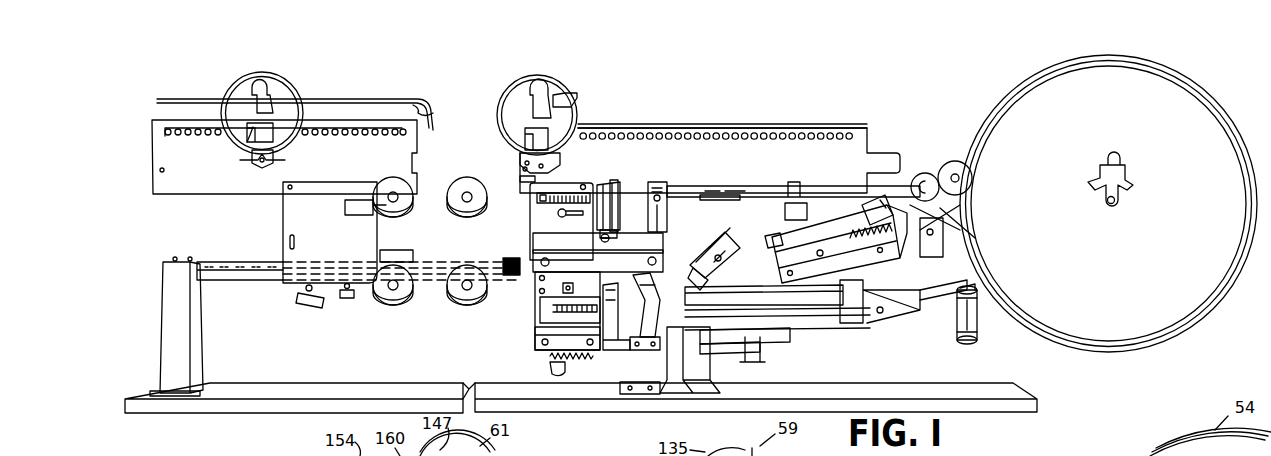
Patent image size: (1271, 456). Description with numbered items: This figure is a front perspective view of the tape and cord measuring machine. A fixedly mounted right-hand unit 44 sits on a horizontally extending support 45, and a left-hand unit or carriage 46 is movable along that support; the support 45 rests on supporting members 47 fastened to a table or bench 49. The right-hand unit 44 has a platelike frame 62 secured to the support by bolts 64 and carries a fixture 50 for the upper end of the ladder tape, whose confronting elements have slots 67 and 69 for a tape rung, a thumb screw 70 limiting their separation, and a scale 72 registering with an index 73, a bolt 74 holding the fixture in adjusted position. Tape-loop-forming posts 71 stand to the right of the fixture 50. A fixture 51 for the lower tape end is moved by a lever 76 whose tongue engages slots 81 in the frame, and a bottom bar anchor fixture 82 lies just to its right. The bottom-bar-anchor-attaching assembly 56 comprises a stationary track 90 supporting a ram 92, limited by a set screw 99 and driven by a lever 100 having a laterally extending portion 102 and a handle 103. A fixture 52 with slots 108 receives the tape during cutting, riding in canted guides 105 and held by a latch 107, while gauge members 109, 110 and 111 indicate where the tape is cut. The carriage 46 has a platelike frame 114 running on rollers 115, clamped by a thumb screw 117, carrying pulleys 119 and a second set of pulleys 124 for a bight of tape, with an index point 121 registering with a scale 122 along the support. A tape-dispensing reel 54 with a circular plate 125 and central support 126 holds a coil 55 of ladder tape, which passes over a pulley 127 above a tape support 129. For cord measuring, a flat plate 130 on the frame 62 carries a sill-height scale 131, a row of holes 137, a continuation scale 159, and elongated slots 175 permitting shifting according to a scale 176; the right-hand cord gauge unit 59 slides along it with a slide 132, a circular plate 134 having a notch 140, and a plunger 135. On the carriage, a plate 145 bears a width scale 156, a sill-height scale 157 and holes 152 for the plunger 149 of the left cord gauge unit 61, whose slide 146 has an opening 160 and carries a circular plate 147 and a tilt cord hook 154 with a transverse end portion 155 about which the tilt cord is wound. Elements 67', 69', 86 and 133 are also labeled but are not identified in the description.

The right-hand unit 44 is at (717, 128).
The horizontally extending support 45 is at (510, 275).
The left-hand unit or carriage 46 is at (260, 147).
The supporting members 47 is at (175, 325).
The table or bench 49 is at (232, 392).
The ladder-tape fixture 50 is at (622, 205).
The ladder-tape fixture 51 is at (598, 372).
The tape-cutting fixture 52 is at (873, 213).
The tape-dispensing reel 54 is at (1108, 202).
The coil of ladder tape 55 is at (1165, 455).
The bottom-bar-anchor-attaching assembly 56 is at (752, 348).
The right-hand cord gauge unit 59 is at (544, 107).
The left-hand cord gauge unit 61 is at (244, 107).
The platelike frame 62 is at (581, 292).
The bolts 64 is at (535, 258).
The slot 67 is at (648, 161).
The lever 67' is at (634, 293).
The slot 69 is at (623, 223).
The pin 69' is at (626, 360).
The thumb screw 70 is at (595, 250).
The tape-loop-forming posts 71 is at (667, 212).
The scale 72 is at (539, 214).
The index 73 is at (530, 183).
The bolt 74 is at (558, 213).
The lever 76 is at (548, 362).
The slots 81 is at (560, 376).
The bottom bar anchor fixture 82 is at (735, 340).
The bracket plate 86 is at (637, 395).
The stationary track 90 is at (745, 362).
The ram 92 is at (805, 310).
The set screw 99 is at (865, 323).
The lever 100 is at (960, 305).
The laterally extending portion 102 is at (905, 315).
The handle 103 is at (980, 320).
The guides 105 is at (775, 250).
The latch 107 is at (795, 197).
The slots 108 is at (907, 187).
The gauge member 109 is at (770, 240).
The gauge member 110 is at (718, 238).
The gauge member 111 is at (690, 250).
The platelike frame or carriage 114 is at (283, 217).
The rollers 115 is at (347, 296).
The thumb screw 117 is at (307, 300).
The pulleys 119 is at (380, 273).
The index point 121 is at (417, 253).
The scale 122 is at (227, 263).
The ladder tape pulleys 124 is at (473, 173).
The circular plate 125 is at (1193, 117).
The central support 126 is at (1135, 185).
The ladder tape pulley 127 is at (958, 162).
The tape support 129 is at (975, 215).
The flat plate 130 is at (790, 123).
The scale 131 is at (750, 137).
The slide 132 is at (553, 153).
The scale 133 is at (863, 157).
The circular plate 134 is at (517, 97).
The plunger or detent 135 is at (533, 108).
The holes 137 is at (630, 133).
The notch 140 is at (567, 98).
The flat plate 145 is at (157, 140).
The slide 146 is at (240, 160).
The circular plate 147 is at (273, 83).
The plunger 149 is at (257, 77).
The holes 152 is at (400, 130).
The tilt cord hook 154 is at (393, 100).
The transverse end portion 155 is at (433, 115).
The scale 156 is at (160, 150).
The scale 157 is at (158, 180).
The scale 159 is at (525, 177).
The opening 160 is at (253, 127).
The elongated slots 175 is at (703, 197).
The scale 176 is at (975, 240).